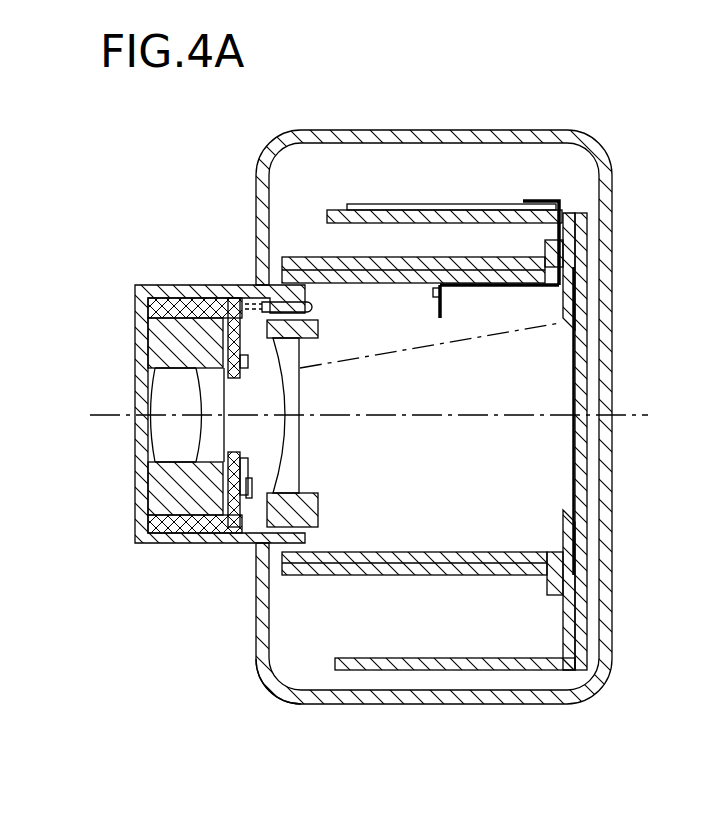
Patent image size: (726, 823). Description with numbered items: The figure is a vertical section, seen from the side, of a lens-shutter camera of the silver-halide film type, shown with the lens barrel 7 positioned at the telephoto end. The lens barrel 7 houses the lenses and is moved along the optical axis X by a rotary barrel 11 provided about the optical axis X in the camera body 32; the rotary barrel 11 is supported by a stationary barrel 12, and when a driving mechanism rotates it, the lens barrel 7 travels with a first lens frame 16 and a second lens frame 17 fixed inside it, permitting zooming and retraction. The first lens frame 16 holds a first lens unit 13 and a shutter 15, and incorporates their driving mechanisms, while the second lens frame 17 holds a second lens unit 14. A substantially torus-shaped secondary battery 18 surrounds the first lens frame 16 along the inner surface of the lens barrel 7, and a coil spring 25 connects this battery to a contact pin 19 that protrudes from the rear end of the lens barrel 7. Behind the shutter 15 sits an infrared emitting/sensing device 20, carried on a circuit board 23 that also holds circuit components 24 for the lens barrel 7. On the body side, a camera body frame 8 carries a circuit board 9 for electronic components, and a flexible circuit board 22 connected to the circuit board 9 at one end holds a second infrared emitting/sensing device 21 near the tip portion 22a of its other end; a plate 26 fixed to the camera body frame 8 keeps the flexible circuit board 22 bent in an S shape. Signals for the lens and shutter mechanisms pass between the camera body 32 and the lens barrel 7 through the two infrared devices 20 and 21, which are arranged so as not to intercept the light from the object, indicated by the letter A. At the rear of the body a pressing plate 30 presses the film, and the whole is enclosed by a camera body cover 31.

The lens barrel 7 is at (146, 290).
The camera body frame 8 is at (337, 204).
The circuit board 9 is at (431, 210).
The rotary barrel 11 is at (306, 256).
The stationary barrel 12 is at (504, 551).
The first lens unit 13 is at (162, 430).
The second lens unit 14 is at (303, 466).
The shutter 15 is at (222, 440).
The first lens frame 16 is at (190, 500).
The second lens frame 17 is at (318, 512).
The secondary battery 18 is at (172, 522).
The contact pin 19 is at (312, 306).
The infrared emitting/sensing device 20 is at (248, 368).
The infrared emitting/sensing device 21 is at (433, 292).
The flexible circuit board 22 is at (541, 199).
The tip portion 22a is at (437, 320).
The circuit board 23 is at (248, 340).
The circuit components 24 is at (253, 497).
The coil spring 25 is at (250, 300).
The plate 26 is at (519, 287).
The pressing plate 30 is at (588, 355).
The camera body cover 31 is at (423, 700).
The camera body 32 is at (318, 714).
The light from the object A is at (430, 329).
The optical axis X is at (634, 417).